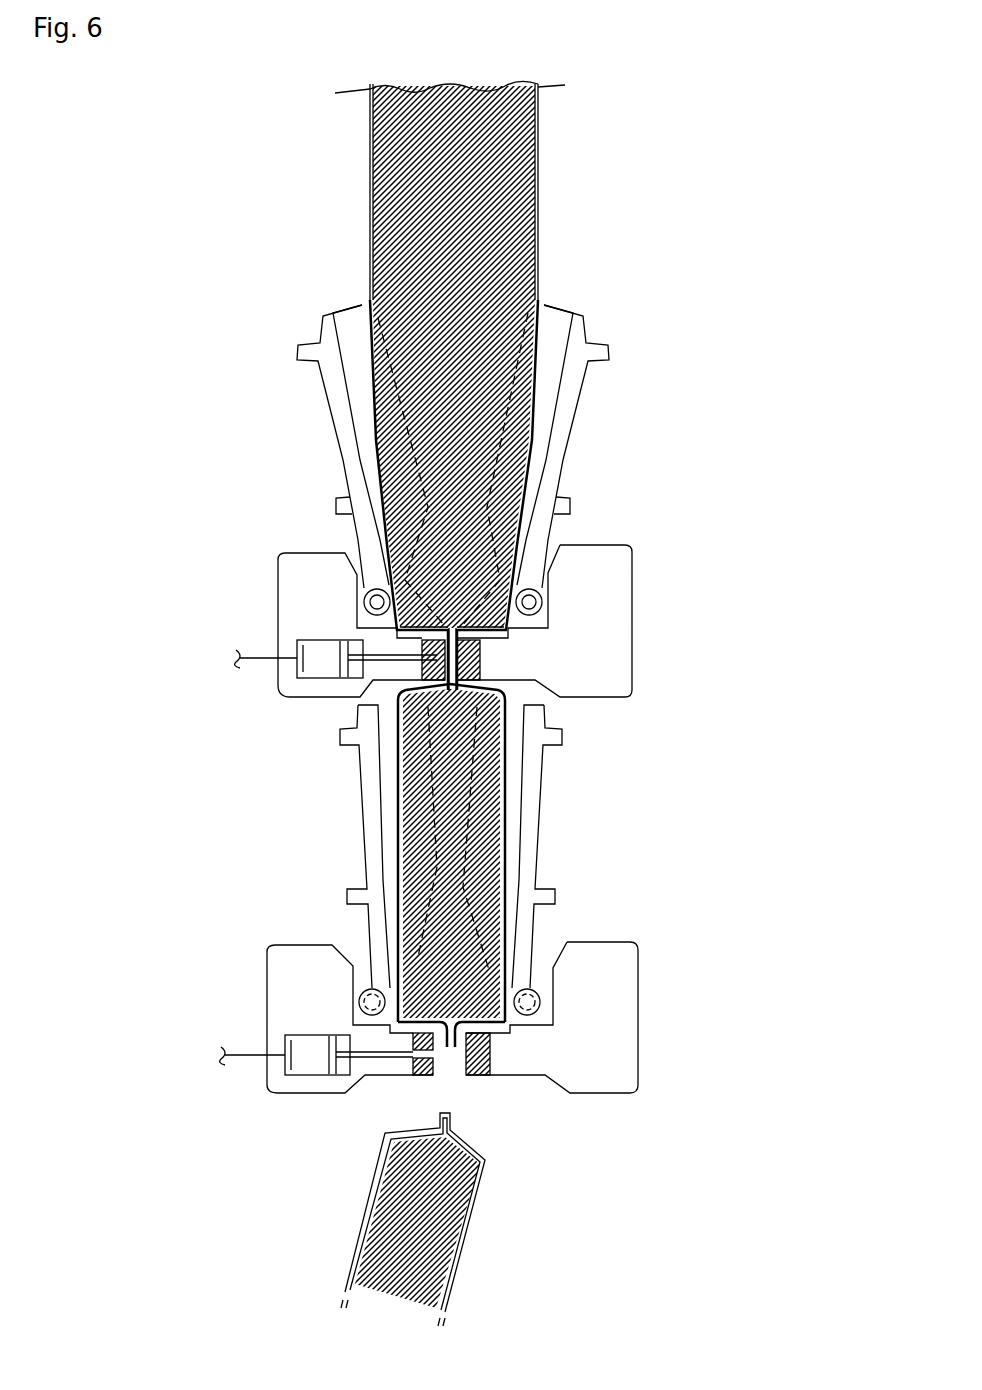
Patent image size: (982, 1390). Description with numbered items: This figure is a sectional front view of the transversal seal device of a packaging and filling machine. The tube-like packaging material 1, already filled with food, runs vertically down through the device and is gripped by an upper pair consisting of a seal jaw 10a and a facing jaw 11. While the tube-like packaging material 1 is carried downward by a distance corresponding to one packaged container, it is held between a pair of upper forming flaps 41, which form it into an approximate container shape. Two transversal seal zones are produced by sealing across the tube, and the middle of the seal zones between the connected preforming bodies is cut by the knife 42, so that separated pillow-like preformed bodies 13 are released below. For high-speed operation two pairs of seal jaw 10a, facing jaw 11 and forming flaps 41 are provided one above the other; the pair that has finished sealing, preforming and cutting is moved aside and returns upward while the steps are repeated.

The tube-like packaging material 1 is at (365, 212).
The upper forming flaps 41 is at (333, 397).
The facing jaw 11 is at (322, 618).
The seal jaw 10a is at (550, 652).
The knife 42 is at (393, 1053).
The pillow-like preformed bodies 13 is at (475, 1225).